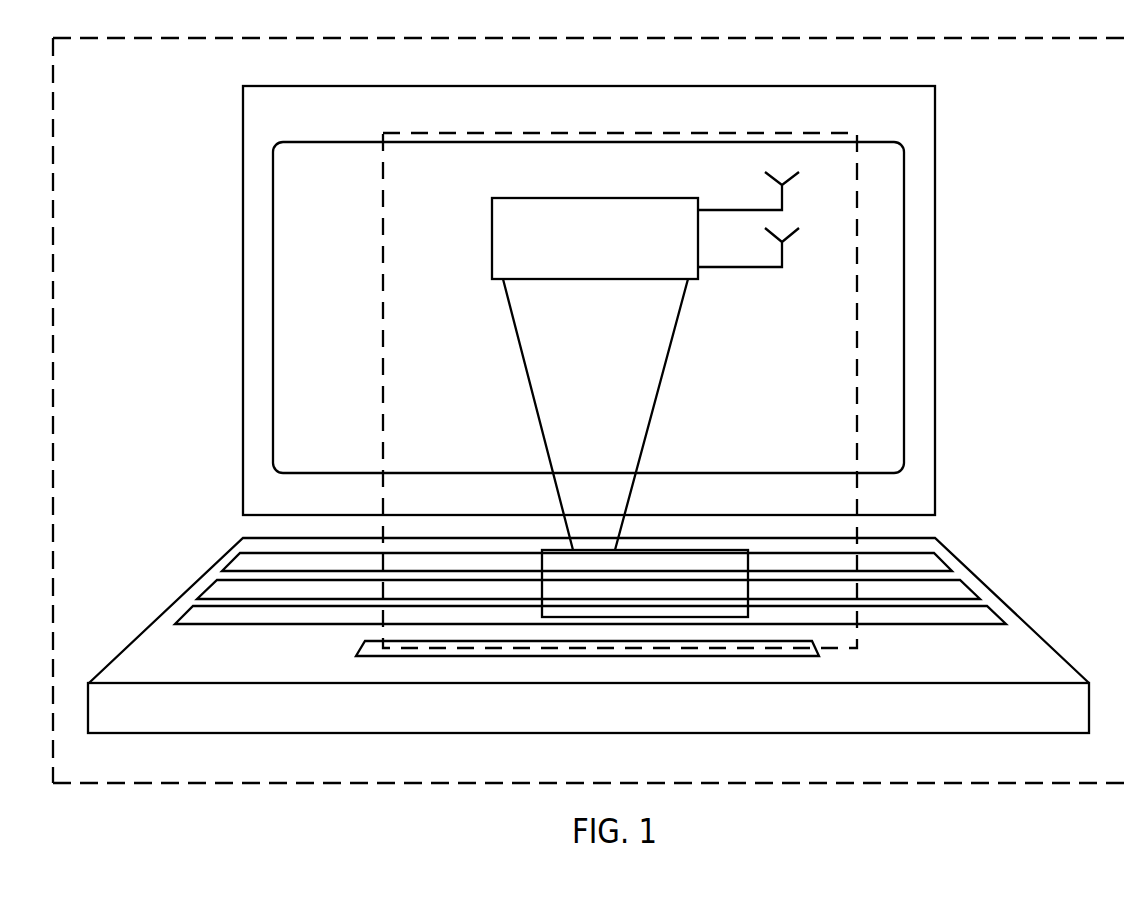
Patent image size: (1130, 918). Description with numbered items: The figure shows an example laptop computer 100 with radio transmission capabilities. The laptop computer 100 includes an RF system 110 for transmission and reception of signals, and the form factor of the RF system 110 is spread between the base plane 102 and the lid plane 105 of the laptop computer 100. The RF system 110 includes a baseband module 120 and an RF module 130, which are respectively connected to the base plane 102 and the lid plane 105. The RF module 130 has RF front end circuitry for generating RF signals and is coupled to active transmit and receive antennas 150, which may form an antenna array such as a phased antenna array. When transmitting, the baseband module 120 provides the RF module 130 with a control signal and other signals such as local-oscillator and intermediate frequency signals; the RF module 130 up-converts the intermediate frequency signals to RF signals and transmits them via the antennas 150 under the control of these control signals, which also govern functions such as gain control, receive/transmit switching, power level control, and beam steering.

The laptop computer 100 is at (1065, 38).
The base plane 102 is at (1000, 592).
The lid plane 105 is at (867, 86).
The RF system 110 is at (582, 133).
The baseband module 120 is at (715, 550).
The RF module 130 is at (628, 198).
The antennas 150 is at (809, 221).